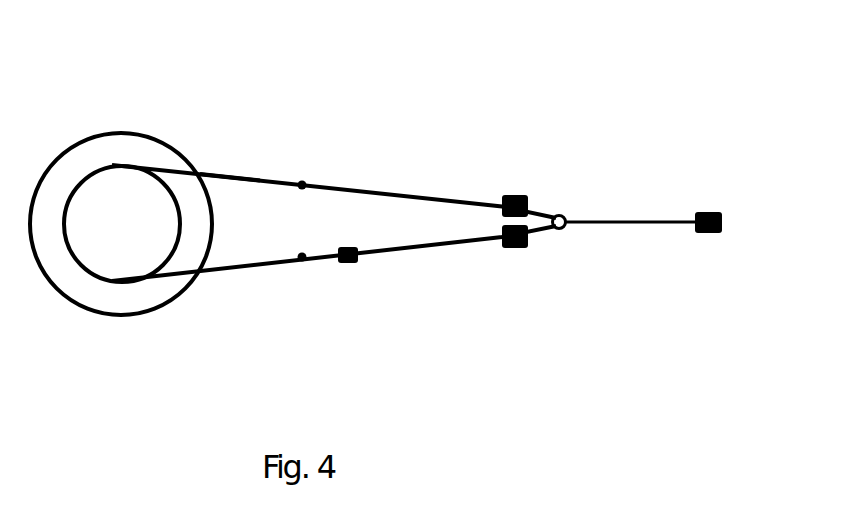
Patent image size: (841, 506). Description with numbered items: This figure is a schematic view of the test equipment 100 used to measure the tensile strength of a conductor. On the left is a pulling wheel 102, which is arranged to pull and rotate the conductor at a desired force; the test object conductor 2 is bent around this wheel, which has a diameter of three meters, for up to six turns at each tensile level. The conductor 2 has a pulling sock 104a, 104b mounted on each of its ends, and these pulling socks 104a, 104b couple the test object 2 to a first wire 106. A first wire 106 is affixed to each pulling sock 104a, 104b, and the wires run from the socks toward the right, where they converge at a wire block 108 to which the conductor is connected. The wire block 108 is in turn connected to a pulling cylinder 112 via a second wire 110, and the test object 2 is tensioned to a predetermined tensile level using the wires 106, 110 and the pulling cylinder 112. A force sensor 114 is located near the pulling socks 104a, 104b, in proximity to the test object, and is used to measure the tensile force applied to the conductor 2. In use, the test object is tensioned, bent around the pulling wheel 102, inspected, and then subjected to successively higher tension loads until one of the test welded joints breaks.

The test equipment 100 is at (262, 100).
The pulling wheel 102 is at (123, 132).
The conductor 2 is at (234, 158).
The pulling sock 104a is at (303, 181).
The pulling sock 104b is at (302, 262).
The first wire 106 is at (412, 194).
The wire block 108 is at (565, 216).
The second wire 110 is at (628, 224).
The pulling cylinder 112 is at (722, 218).
The force sensor 114 is at (345, 265).